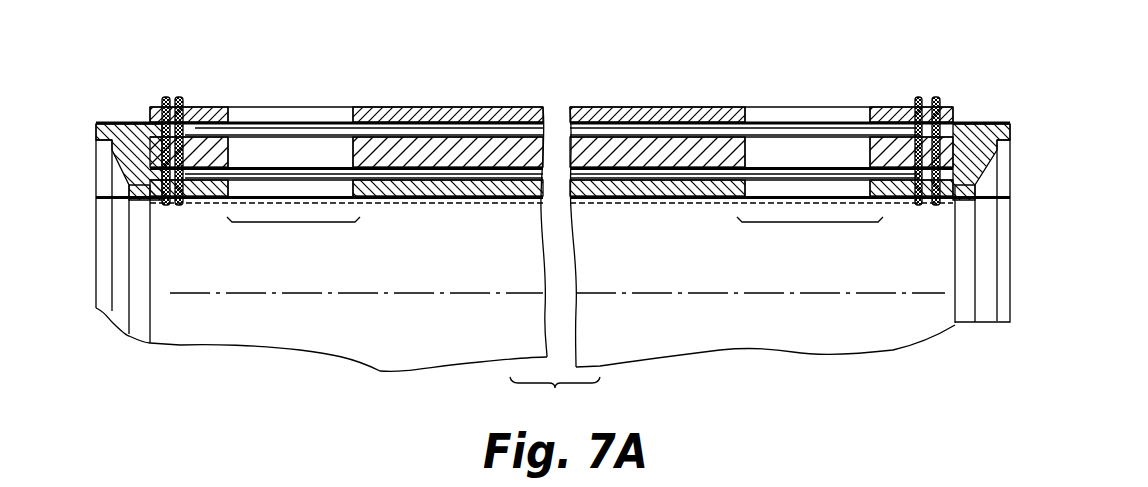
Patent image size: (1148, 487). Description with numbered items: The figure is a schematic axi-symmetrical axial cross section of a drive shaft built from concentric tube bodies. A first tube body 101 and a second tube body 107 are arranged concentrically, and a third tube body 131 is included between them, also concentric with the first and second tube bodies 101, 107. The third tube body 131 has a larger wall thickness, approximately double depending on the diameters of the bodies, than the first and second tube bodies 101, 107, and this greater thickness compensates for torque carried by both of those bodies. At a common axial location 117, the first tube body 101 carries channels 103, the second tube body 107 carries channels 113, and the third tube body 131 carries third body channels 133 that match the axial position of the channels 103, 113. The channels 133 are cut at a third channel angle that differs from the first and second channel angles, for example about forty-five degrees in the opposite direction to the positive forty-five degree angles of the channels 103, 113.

The first tube body 101 is at (370, 107).
The first body channel 103 is at (765, 112).
The second tube body 107 is at (469, 200).
The second body channel 113 is at (840, 188).
The axial location 117 is at (293, 234).
The third tube body 131 is at (440, 150).
The third body channel 133 is at (253, 157).